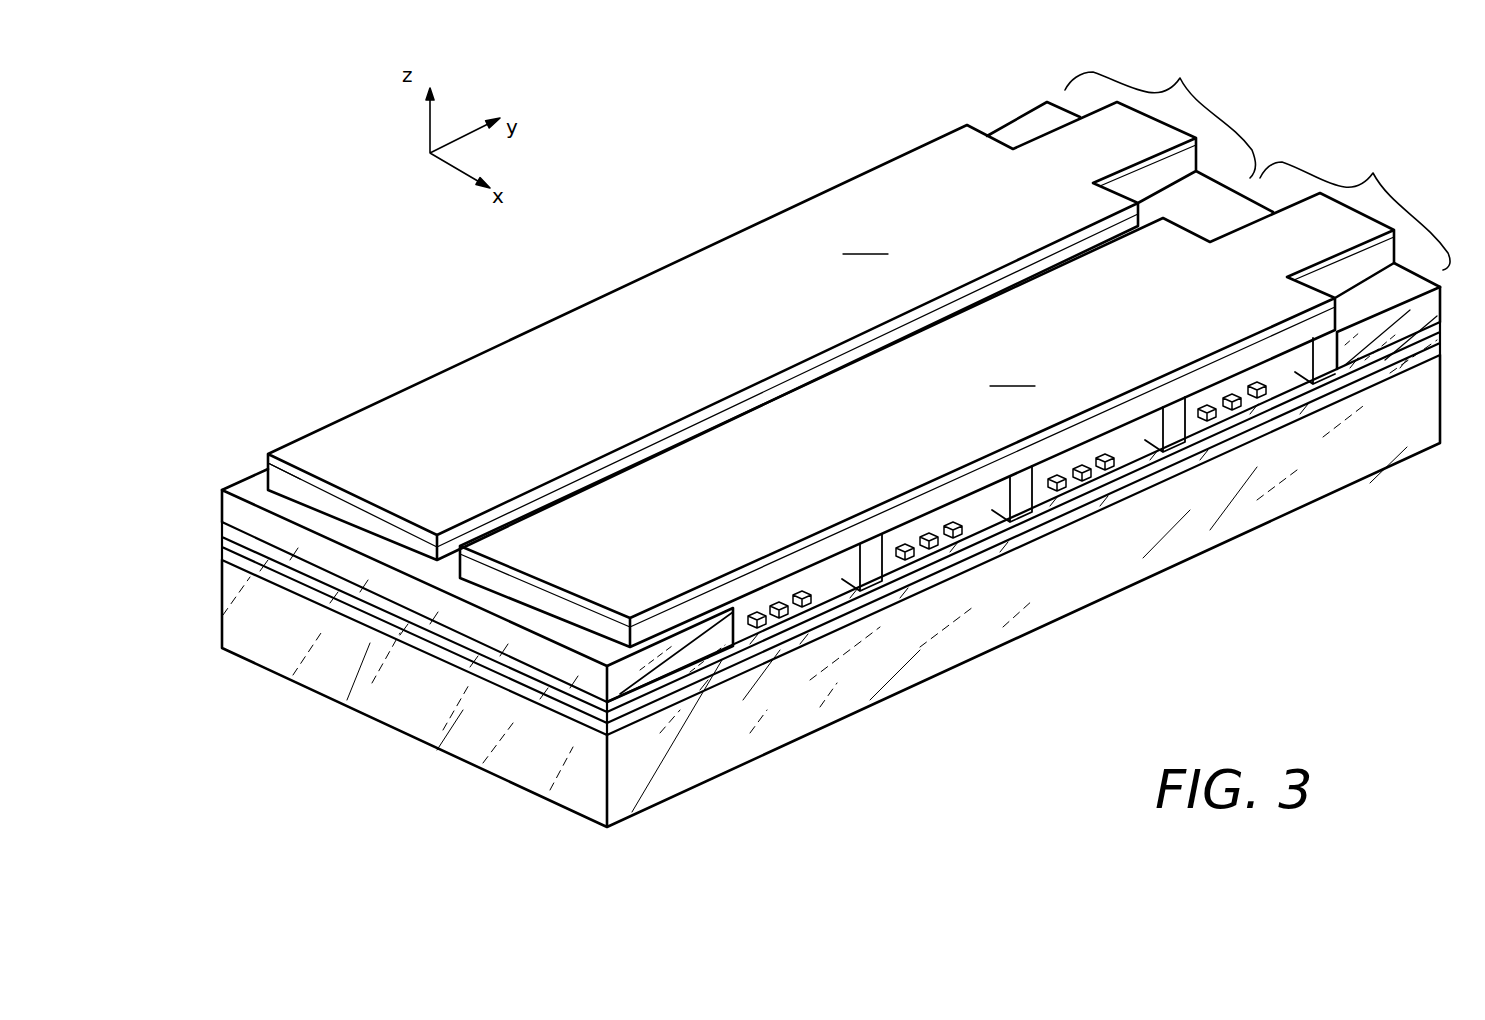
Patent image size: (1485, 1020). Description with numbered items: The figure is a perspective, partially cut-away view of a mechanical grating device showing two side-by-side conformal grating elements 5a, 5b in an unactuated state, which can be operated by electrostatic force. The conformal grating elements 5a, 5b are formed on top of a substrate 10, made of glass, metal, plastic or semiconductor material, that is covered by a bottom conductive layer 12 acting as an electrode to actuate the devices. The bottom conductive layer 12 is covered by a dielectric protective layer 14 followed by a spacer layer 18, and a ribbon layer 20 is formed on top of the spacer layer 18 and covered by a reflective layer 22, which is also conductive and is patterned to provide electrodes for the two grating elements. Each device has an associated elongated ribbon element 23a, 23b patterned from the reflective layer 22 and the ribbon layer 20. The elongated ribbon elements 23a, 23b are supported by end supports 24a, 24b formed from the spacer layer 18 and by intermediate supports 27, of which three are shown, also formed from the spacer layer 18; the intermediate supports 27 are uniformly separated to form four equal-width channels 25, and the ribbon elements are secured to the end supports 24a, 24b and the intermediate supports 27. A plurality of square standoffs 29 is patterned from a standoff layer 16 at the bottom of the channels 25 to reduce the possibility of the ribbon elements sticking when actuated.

The conformal grating element 5a is at (1160, 112).
The conformal grating element 5b is at (1355, 202).
The substrate 10 is at (475, 743).
The bottom conductive layer 12 is at (262, 552).
The dielectric protective layer 14 is at (282, 582).
The standoff layer 16 is at (337, 590).
The spacer layer 18 is at (563, 667).
The ribbon layer 20 is at (278, 480).
The reflective layer 22 is at (290, 467).
The elongated ribbon element 23a is at (770, 331).
The elongated ribbon element 23b is at (927, 420).
The end support 24a is at (1390, 334).
The end support 24b is at (688, 647).
The channel 25 is at (792, 622).
The intermediate support 27 is at (872, 568).
The square standoff 29 is at (1112, 470).